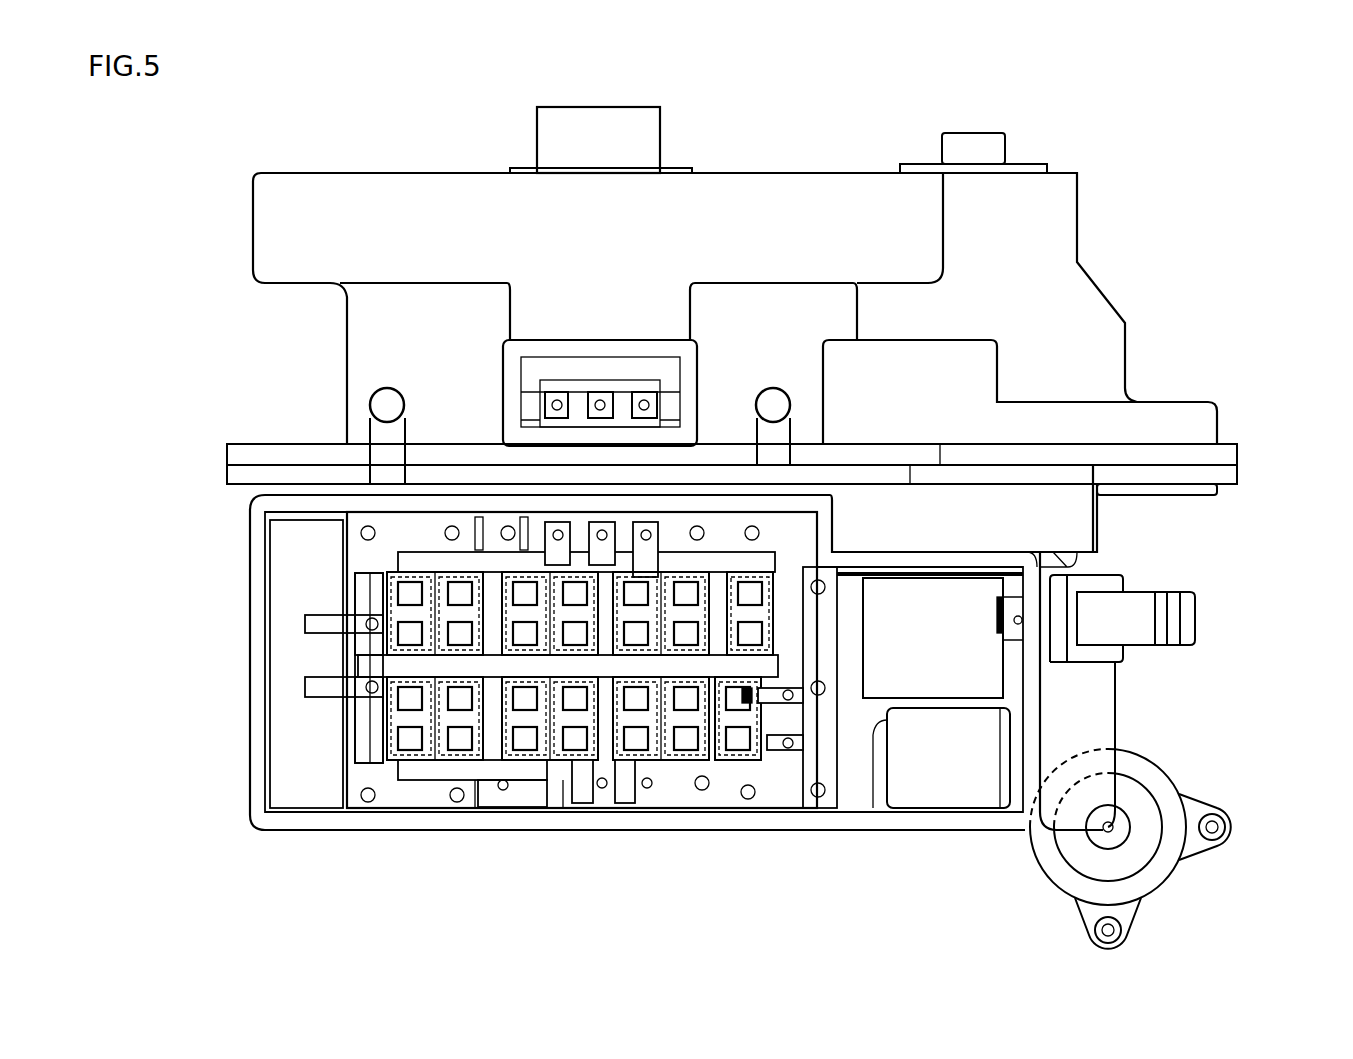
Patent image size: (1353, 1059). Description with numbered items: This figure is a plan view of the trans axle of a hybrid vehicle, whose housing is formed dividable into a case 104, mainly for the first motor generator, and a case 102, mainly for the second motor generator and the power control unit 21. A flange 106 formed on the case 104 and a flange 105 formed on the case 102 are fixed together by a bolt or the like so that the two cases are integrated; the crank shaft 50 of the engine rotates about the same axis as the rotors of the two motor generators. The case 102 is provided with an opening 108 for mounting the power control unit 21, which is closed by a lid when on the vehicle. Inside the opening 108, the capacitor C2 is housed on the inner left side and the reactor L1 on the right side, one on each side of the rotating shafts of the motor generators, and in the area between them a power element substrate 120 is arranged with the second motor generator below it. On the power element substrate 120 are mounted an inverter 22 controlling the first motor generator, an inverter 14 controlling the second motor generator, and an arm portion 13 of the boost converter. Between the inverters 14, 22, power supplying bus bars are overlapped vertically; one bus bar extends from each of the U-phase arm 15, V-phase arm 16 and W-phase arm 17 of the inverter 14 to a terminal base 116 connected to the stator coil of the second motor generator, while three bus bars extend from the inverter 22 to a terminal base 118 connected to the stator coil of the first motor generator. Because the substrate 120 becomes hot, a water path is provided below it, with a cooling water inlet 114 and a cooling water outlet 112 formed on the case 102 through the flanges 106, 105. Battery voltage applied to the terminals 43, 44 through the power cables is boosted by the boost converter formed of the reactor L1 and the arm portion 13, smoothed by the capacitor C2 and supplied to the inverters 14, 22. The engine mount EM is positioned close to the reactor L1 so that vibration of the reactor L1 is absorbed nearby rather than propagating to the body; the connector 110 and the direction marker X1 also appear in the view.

The crank shaft 50 is at (662, 131).
The cooling water inlet 114 is at (773, 388).
The case 104 is at (1247, 160).
The connector 110 is at (530, 370).
The terminal base 118 is at (578, 520).
The cooling water outlet 112 is at (368, 405).
The flange 106 is at (227, 455).
The flange 105 is at (227, 478).
The capacitor C2 is at (265, 530).
The inverter 22 is at (372, 567).
The power control unit 21 is at (292, 613).
The inverter 14 is at (383, 719).
The U-phase arm 15 is at (395, 749).
The opening 108 is at (277, 795).
The power element substrate 120 is at (343, 813).
The V-phase arm 16 is at (500, 728).
The terminal base 116 is at (580, 806).
The W-phase arm 17 is at (612, 745).
The direction X1 is at (677, 845).
The arm portion 13 is at (762, 752).
The terminal 43 is at (1168, 605).
The terminal 44 is at (1197, 608).
The reactor L1 is at (992, 708).
The engine mount EM is at (1170, 877).
The case 102 is at (1247, 830).